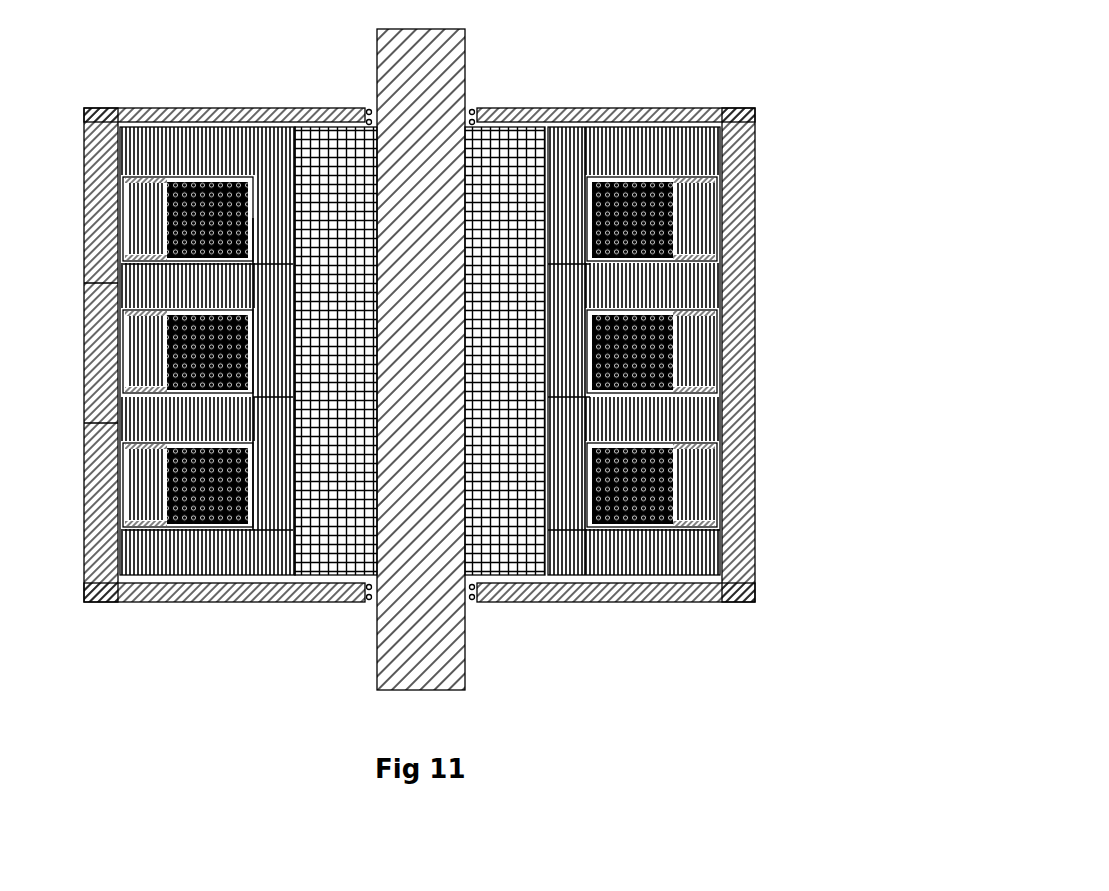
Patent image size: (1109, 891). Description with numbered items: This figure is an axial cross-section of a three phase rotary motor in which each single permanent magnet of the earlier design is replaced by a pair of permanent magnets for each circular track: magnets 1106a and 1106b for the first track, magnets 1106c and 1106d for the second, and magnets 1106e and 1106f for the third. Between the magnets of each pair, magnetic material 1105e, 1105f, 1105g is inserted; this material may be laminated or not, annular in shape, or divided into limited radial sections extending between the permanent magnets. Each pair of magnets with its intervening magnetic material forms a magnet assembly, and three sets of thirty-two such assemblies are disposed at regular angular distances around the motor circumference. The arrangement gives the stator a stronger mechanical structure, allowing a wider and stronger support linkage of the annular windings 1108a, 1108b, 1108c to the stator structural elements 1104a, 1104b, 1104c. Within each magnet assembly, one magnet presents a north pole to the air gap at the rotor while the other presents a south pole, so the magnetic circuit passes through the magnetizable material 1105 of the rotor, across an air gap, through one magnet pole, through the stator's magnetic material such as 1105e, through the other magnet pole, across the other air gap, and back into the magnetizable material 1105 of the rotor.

The stator structural element 1104a is at (755, 124).
The stator structural element 1104b is at (743, 337).
The stator structural element 1104c is at (737, 553).
The magnetizable material of the rotor 1105 is at (608, 150).
The magnetic material 1105e is at (712, 196).
The magnetic material 1105f is at (690, 353).
The magnetic material 1105g is at (697, 497).
The permanent magnet 1106a is at (700, 178).
The permanent magnet 1106b is at (708, 256).
The permanent magnet 1106c is at (718, 317).
The permanent magnet 1106d is at (687, 388).
The permanent magnet 1106e is at (718, 447).
The permanent magnet 1106f is at (720, 522).
The annular winding 1108a is at (683, 212).
The annular winding 1108b is at (686, 373).
The annular winding 1108c is at (675, 505).